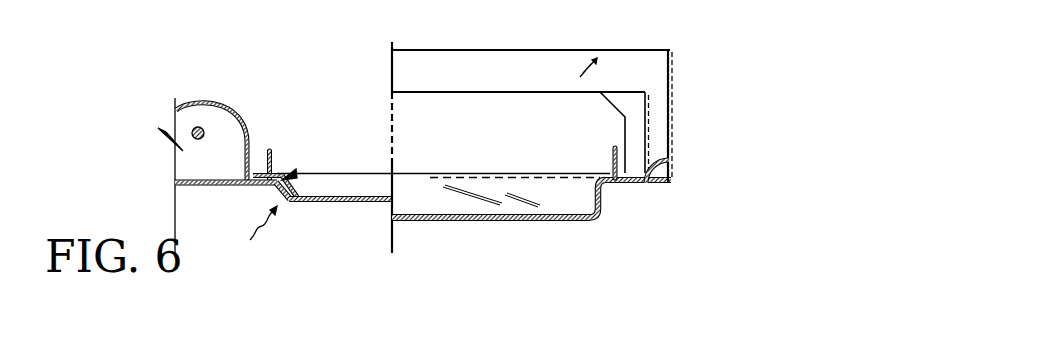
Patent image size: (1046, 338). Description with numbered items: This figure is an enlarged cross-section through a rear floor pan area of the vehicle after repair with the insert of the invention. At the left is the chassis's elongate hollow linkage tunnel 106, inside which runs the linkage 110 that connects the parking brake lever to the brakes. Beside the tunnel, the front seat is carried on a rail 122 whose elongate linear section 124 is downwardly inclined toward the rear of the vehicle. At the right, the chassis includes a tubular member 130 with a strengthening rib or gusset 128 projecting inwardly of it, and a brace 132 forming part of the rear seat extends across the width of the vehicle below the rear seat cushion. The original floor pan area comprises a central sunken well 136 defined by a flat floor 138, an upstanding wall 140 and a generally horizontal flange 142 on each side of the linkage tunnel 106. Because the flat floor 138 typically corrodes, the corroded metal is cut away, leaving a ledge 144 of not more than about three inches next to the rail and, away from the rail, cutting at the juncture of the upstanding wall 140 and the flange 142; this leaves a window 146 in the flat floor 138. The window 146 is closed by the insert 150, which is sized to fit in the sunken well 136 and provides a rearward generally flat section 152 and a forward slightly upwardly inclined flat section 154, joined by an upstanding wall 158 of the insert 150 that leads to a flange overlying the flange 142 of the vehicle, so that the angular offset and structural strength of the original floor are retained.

The linkage tunnel 106 is at (208, 104).
The linkage 110 is at (205, 130).
The rail 122 is at (272, 150).
The linear section 124 is at (607, 156).
The strengthening rib or gusset 128 is at (625, 132).
The tubular member 130 is at (655, 152).
The brace 132 is at (505, 86).
The sunken well 136 is at (246, 231).
The flat floor 138 is at (302, 201).
The upstanding wall 140 is at (280, 193).
The flange 142 is at (257, 186).
The ledge 144 is at (295, 172).
The window 146 is at (605, 190).
The insert 150 is at (399, 173).
The rearward generally flat section 152 is at (473, 215).
The forward slightly upwardly inclined flat section 154 is at (437, 200).
The upstanding wall 158 is at (274, 171).